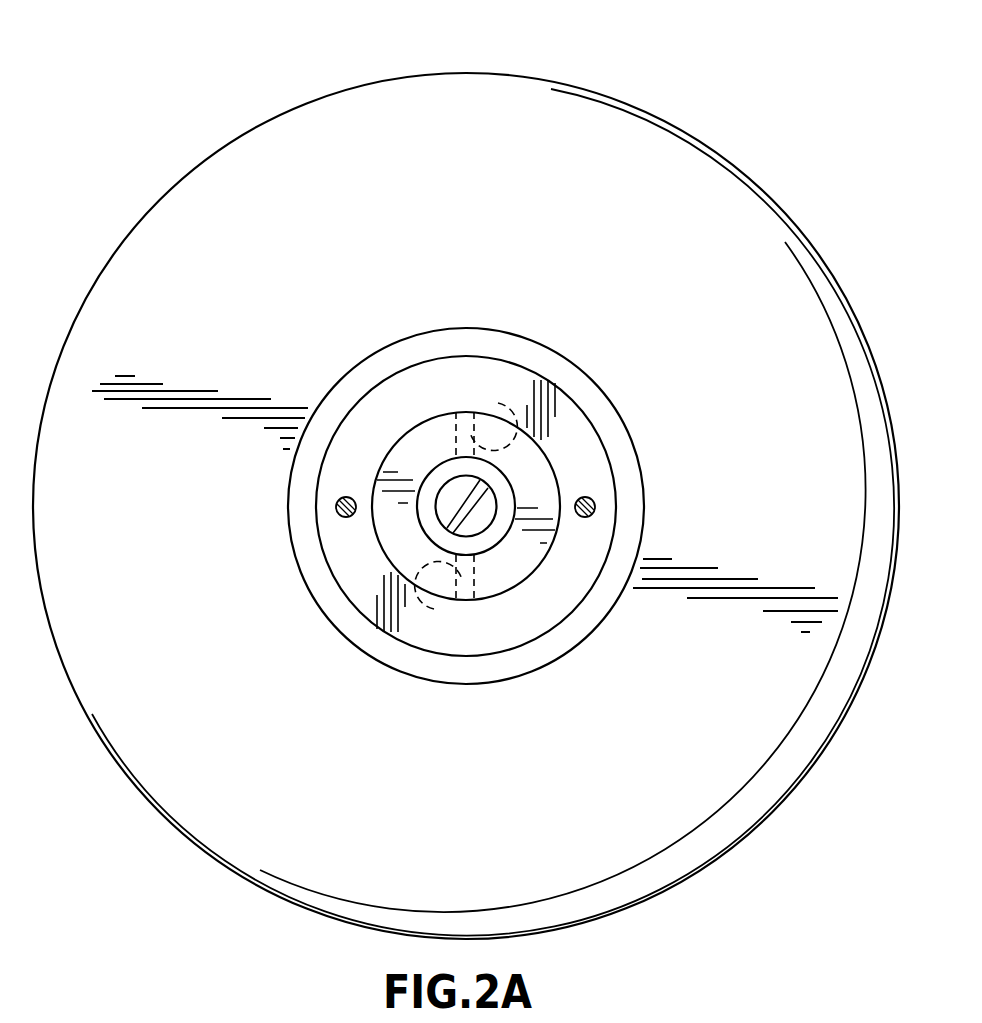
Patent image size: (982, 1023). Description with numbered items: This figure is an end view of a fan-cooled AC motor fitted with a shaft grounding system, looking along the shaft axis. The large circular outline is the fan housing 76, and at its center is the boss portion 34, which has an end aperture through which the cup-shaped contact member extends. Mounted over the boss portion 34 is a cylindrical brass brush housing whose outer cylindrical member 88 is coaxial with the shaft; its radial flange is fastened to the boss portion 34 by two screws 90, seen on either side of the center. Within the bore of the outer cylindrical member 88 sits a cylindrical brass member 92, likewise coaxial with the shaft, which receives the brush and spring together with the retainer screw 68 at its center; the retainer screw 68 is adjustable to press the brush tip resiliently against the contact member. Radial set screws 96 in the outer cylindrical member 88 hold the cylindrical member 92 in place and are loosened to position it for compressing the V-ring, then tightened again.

The fan housing 76 is at (502, 72).
The boss portion 34 is at (358, 628).
The outer cylindrical member 88 is at (513, 615).
The cylindrical brass member 92 is at (445, 458).
The retainer screw 68 is at (497, 500).
The radial set screws 96 is at (434, 620).
The screws 90 is at (335, 507).